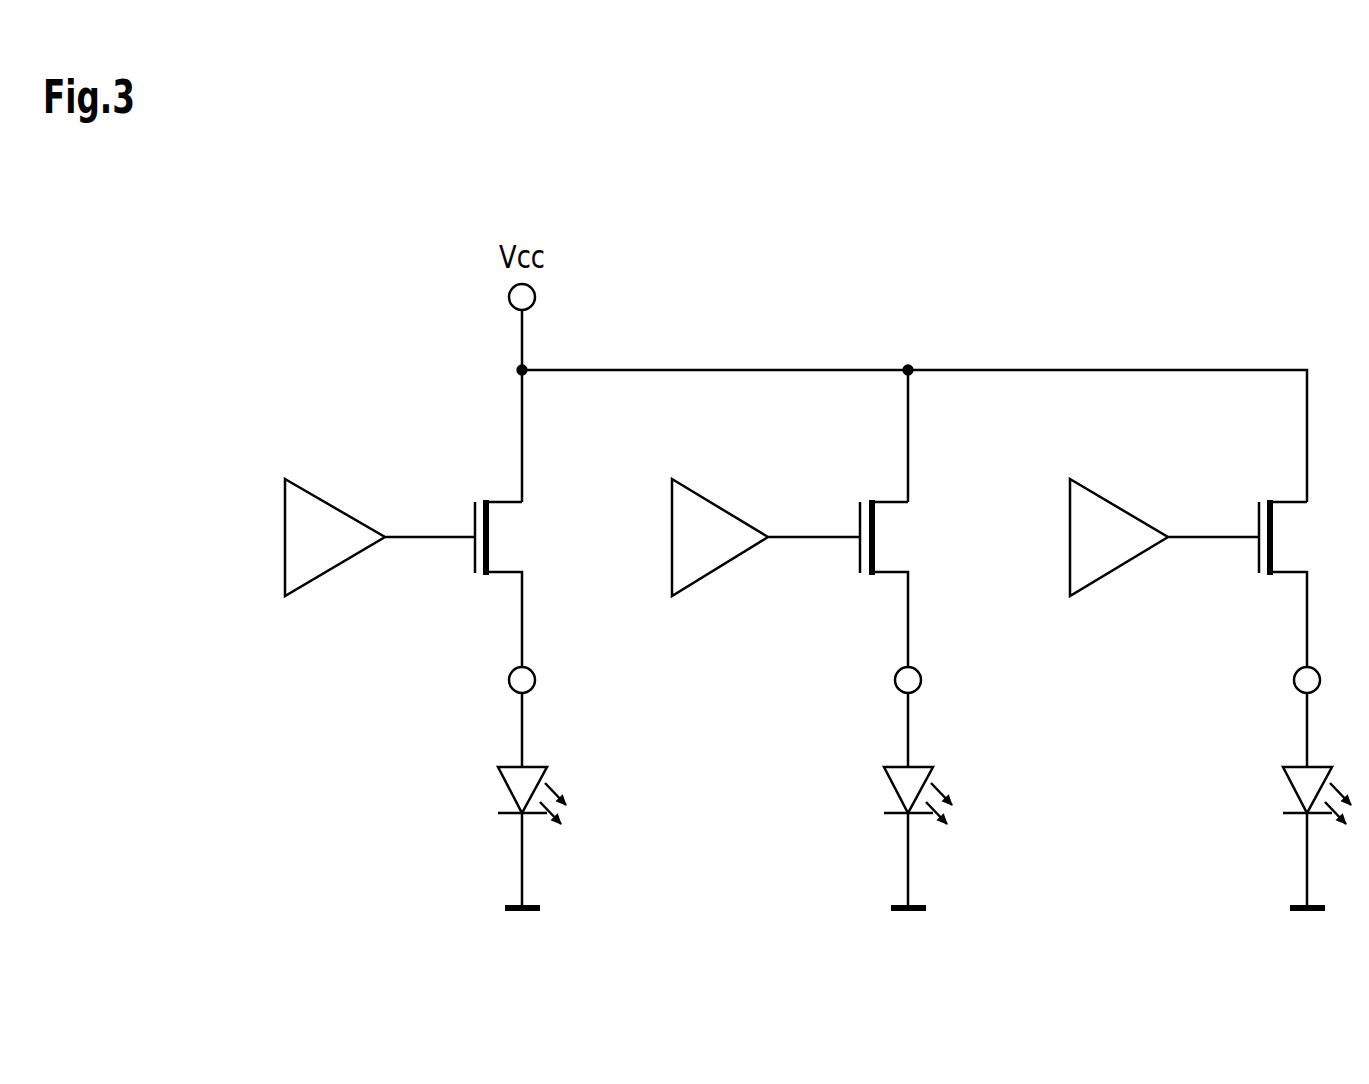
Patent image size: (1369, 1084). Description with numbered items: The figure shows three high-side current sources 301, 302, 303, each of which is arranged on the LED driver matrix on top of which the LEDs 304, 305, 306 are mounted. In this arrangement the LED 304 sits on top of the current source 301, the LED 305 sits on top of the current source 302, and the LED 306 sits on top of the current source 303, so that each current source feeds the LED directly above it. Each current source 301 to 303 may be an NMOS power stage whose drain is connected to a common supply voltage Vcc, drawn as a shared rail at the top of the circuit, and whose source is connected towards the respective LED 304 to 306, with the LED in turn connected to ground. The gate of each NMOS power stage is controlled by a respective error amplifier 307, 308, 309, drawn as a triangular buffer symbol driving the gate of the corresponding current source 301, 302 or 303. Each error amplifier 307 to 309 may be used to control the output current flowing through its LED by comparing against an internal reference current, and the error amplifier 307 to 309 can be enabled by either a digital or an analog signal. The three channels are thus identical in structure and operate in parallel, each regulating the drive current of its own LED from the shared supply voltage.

The high-side current source 301 is at (508, 583).
The high-side current source 302 is at (894, 583).
The high-side current source 303 is at (1293, 583).
The LED 304 is at (505, 800).
The LED 305 is at (892, 800).
The LED 306 is at (1290, 800).
The error amplifier 307 is at (380, 545).
The error amplifier 308 is at (766, 545).
The error amplifier 309 is at (1164, 545).